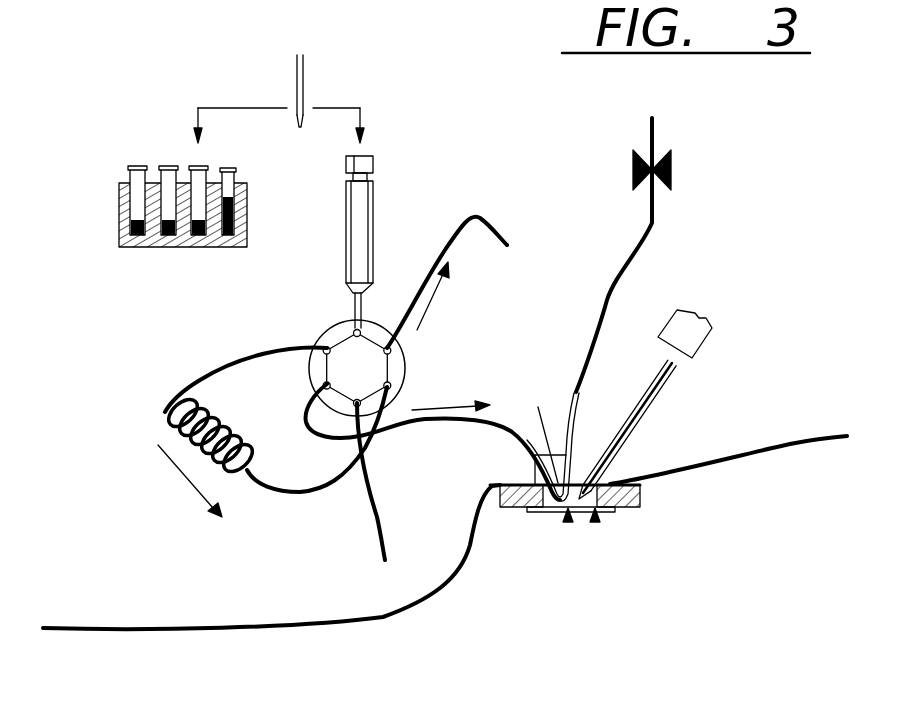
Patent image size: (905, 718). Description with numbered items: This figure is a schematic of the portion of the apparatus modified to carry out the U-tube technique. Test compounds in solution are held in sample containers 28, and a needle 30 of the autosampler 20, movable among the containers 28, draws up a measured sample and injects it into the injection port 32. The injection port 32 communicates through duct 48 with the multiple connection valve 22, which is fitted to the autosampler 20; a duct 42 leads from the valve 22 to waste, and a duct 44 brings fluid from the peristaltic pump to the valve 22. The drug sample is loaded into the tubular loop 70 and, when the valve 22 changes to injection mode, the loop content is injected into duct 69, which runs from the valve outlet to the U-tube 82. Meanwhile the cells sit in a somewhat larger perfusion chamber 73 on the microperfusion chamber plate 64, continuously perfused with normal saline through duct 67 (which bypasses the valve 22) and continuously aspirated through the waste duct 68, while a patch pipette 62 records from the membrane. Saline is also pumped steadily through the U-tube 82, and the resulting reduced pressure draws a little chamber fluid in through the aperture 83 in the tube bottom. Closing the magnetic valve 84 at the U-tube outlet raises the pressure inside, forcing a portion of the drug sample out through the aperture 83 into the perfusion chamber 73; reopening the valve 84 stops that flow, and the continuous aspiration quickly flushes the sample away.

The autosampler 20 is at (128, 284).
The multiple connection valve 22 is at (323, 326).
The sample containers 28 is at (137, 167).
The needle 30 is at (303, 86).
The injection port 32 is at (373, 163).
The duct 42 is at (508, 233).
The duct 44 is at (377, 547).
The duct 48 is at (366, 312).
The patch pipette 62 is at (668, 377).
The microperfusion chamber plate 64 is at (657, 480).
The duct 67 is at (250, 632).
The waste duct 68 is at (770, 452).
The duct 69 is at (413, 430).
The tubular loop 70 is at (172, 433).
The perfusion chamber 73 is at (597, 520).
The U-tube 82 is at (572, 450).
The aperture 83 is at (570, 520).
The magnetic valve 84 is at (671, 165).